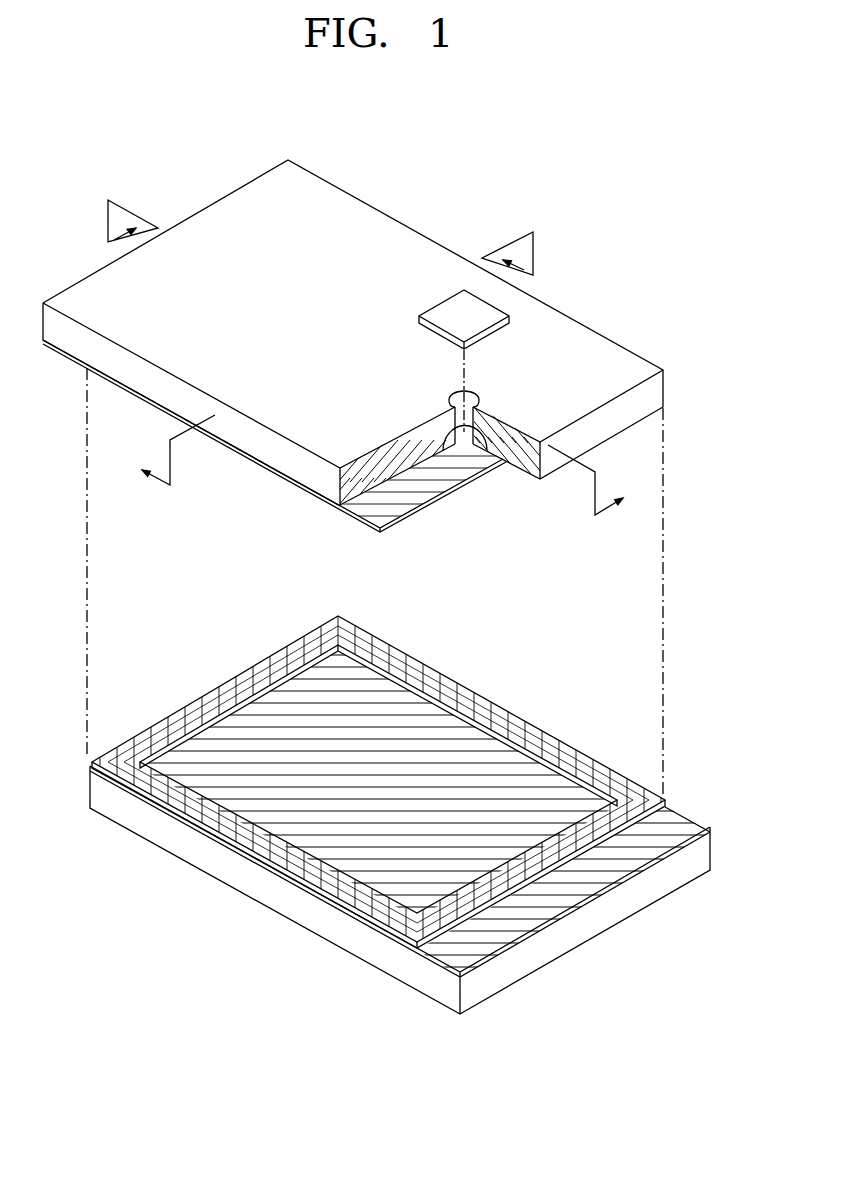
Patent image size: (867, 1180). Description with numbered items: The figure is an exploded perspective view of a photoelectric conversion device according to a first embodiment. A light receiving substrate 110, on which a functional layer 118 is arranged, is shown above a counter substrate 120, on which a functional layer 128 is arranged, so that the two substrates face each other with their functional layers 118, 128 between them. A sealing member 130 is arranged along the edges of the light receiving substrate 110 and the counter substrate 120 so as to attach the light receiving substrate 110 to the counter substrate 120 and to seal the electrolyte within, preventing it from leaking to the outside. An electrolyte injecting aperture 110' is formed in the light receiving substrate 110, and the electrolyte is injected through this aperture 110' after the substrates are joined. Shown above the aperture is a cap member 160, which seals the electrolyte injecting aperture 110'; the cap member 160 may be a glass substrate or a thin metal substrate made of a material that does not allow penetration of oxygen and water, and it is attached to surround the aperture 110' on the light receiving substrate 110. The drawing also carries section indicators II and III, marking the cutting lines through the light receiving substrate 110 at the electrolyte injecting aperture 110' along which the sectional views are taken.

The light receiving substrate 110 is at (355, 340).
The electrolyte injecting aperture 110' is at (480, 480).
The functional layer 118 is at (372, 522).
The cap member 160 is at (463, 305).
The counter substrate 120 is at (597, 923).
The functional layer 128 is at (343, 830).
The sealing member 130 is at (532, 730).
The section line II- II is at (343, 369).
The section line III- III is at (360, 367).